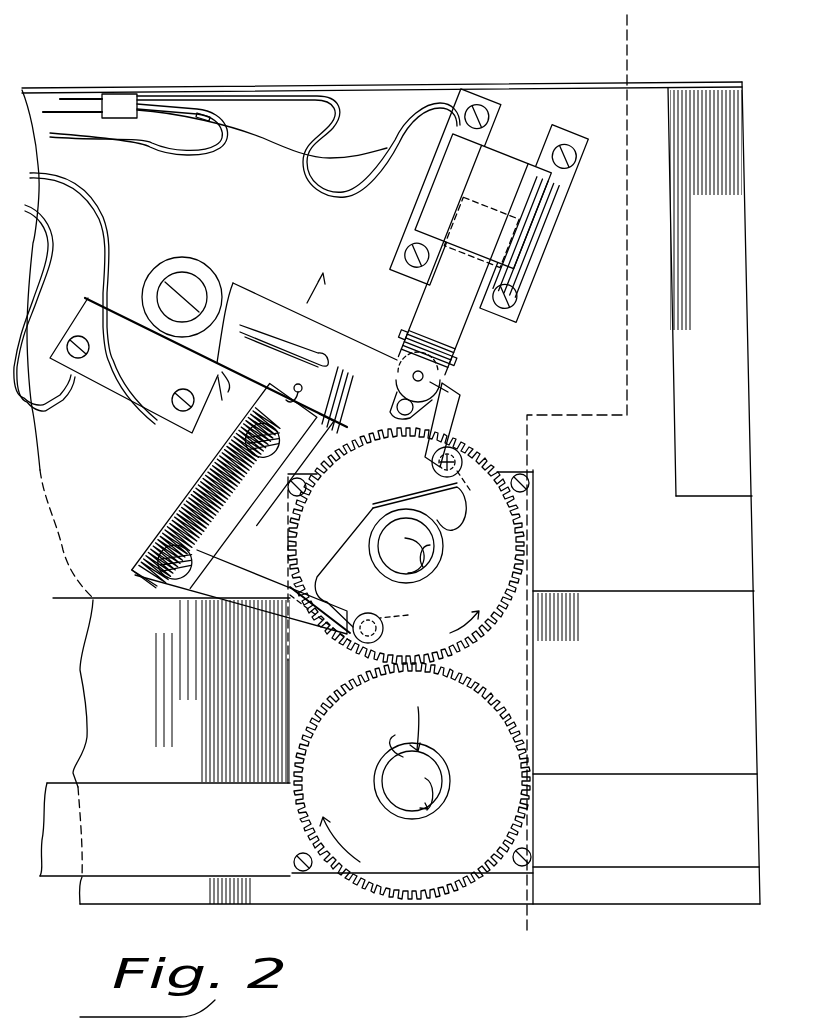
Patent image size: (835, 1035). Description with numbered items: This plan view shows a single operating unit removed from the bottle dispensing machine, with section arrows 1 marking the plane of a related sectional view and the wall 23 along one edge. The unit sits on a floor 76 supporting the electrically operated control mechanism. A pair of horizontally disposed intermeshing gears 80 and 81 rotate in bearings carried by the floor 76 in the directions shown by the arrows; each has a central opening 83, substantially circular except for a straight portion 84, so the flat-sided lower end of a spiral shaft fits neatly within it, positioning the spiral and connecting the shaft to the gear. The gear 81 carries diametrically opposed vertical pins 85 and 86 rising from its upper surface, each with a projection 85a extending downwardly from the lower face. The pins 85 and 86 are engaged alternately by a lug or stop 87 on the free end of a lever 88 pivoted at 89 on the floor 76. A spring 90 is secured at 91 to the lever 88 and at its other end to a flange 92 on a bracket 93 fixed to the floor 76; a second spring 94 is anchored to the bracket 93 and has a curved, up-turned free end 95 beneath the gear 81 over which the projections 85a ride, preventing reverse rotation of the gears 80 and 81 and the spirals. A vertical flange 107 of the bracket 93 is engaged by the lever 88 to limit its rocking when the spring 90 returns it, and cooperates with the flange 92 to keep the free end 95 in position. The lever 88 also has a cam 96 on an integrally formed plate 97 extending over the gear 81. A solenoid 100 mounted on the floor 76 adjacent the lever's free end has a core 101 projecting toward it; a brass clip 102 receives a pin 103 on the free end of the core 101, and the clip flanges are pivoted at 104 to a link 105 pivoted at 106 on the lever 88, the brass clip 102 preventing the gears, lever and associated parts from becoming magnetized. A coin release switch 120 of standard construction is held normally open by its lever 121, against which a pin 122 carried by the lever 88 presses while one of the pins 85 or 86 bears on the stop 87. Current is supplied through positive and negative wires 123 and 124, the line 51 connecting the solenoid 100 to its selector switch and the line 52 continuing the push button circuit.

The section line 1- 1 is at (640, 32).
The wall 23 is at (590, 82).
The line 51 is at (330, 131).
The line 52 is at (288, 148).
The floor 76 is at (391, 493).
The gear 80 is at (409, 779).
The gear 81 is at (410, 546).
The central opening 83 is at (408, 578).
The straight portion 84 is at (423, 567).
The pin 85 is at (460, 458).
The projection 85a is at (438, 547).
The pin 86 is at (380, 637).
The lug or stop 87 is at (457, 413).
The lever 88 is at (312, 325).
The pivot 89 is at (195, 290).
The spring 90 is at (223, 480).
The securing point 91 is at (311, 388).
The flange 92 is at (142, 580).
The bracket 93 is at (170, 523).
The spring 94 is at (239, 592).
The curved free end 95 is at (367, 612).
The cam 96 is at (403, 500).
The plate 97 is at (390, 557).
The solenoid 100 is at (537, 250).
The core 101 is at (480, 332).
The clip 102 is at (423, 375).
The pin 103 is at (400, 333).
The pivot 104 is at (455, 355).
The link 105 is at (453, 385).
The pivot 106 is at (398, 409).
The vertical flange 107 is at (295, 469).
The coin release switch 120 is at (134, 365).
The lever 121 is at (230, 387).
The pin 122 is at (240, 290).
The positive wire 123 is at (50, 276).
The negative wire 124 is at (110, 228).